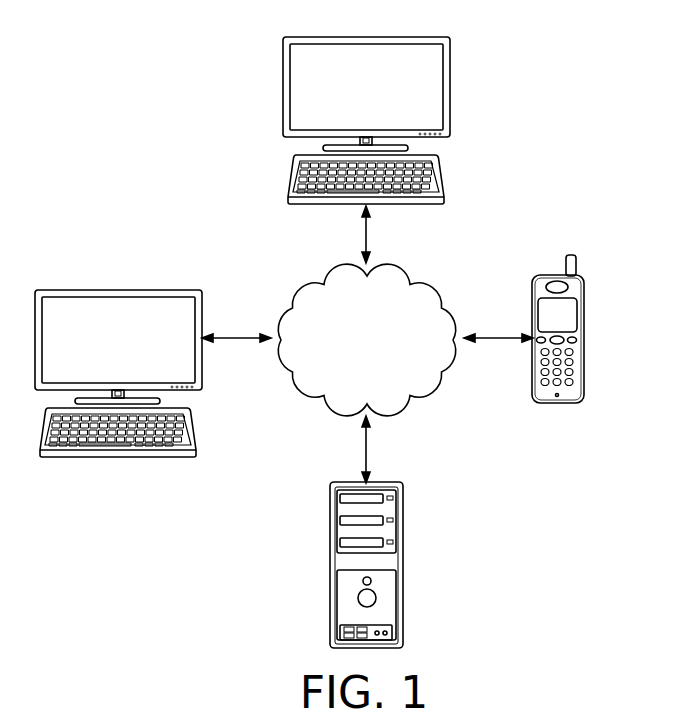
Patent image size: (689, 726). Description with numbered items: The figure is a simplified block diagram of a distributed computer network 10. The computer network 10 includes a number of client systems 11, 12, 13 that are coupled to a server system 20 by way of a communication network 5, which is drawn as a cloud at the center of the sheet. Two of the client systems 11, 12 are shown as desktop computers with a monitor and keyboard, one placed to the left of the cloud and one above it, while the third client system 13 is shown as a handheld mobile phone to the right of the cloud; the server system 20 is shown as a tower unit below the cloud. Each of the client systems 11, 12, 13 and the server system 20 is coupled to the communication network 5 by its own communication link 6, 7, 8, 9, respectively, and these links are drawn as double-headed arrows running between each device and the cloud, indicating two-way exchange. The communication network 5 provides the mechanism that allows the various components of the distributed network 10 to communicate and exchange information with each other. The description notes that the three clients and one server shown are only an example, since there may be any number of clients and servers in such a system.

The distributed computer network 10 is at (555, 81).
The client system 11 is at (120, 290).
The client system 12 is at (283, 88).
The client system 13 is at (585, 325).
The communication network 5 is at (366, 340).
The communication link 6 is at (232, 338).
The communication link 7 is at (367, 235).
The communication link 8 is at (500, 336).
The communication link 9 is at (367, 447).
The server system 20 is at (404, 567).